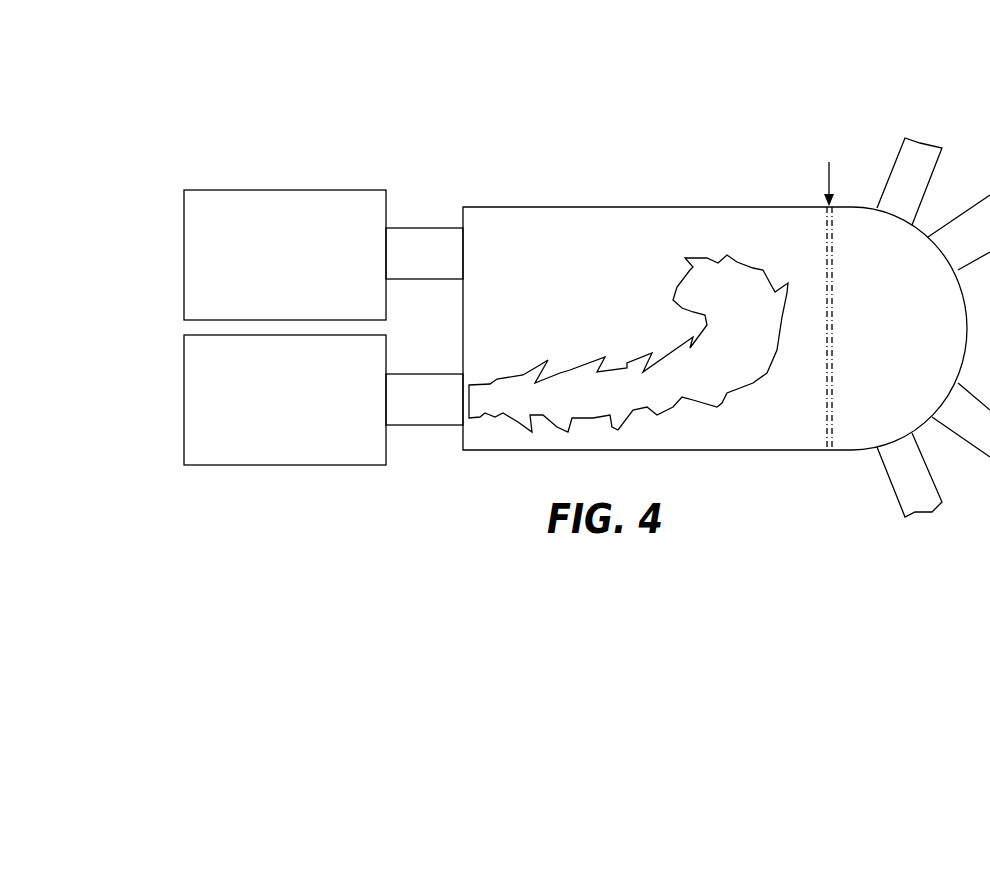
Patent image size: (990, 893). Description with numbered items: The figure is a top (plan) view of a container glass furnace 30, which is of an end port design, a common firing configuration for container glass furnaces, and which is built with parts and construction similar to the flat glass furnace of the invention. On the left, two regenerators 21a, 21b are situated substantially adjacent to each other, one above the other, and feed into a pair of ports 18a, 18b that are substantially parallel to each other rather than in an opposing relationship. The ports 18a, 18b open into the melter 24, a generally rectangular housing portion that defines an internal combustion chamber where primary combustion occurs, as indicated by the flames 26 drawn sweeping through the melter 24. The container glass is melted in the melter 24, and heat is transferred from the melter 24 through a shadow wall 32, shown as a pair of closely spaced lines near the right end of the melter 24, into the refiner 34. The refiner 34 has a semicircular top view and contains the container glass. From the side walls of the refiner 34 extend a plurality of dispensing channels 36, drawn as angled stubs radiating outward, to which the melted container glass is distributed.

The container glass furnace 30 is at (236, 118).
The regenerator 21a is at (184, 365).
The regenerator 21b is at (184, 220).
The port 18a is at (424, 374).
The port 18b is at (424, 228).
The melter 24 is at (630, 207).
The flames 26 is at (627, 367).
The shadow wall 32 is at (832, 394).
The refiner 34 is at (877, 283).
The dispensing channels 36 is at (922, 140).